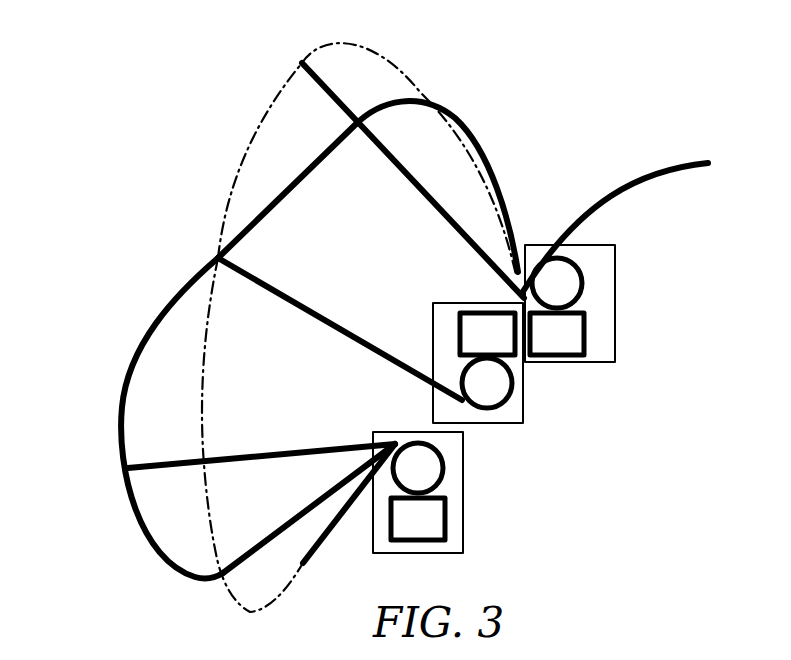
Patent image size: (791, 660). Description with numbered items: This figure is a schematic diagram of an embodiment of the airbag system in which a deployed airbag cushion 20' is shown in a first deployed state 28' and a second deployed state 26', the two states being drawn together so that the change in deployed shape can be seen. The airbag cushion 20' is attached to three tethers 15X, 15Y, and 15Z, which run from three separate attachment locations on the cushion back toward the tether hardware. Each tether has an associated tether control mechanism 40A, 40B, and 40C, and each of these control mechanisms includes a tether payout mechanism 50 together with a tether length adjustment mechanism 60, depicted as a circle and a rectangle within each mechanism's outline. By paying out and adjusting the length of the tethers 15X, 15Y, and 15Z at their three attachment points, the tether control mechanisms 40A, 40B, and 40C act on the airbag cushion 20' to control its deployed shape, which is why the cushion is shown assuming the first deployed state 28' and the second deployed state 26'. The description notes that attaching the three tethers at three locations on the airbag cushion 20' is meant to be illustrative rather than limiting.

The airbag cushion 20' is at (363, 320).
The second deployed state 26' is at (336, 327).
The first deployed state 28' is at (281, 297).
The tether 15X is at (440, 206).
The tether 15Y is at (377, 350).
The tether 15Z is at (310, 450).
The tether control mechanism 40A is at (617, 255).
The tether control mechanism 40B is at (508, 424).
The tether control mechanism 40C is at (463, 450).
The tether payout mechanism 50 is at (585, 283).
The tether length adjustment mechanism 60 is at (588, 335).